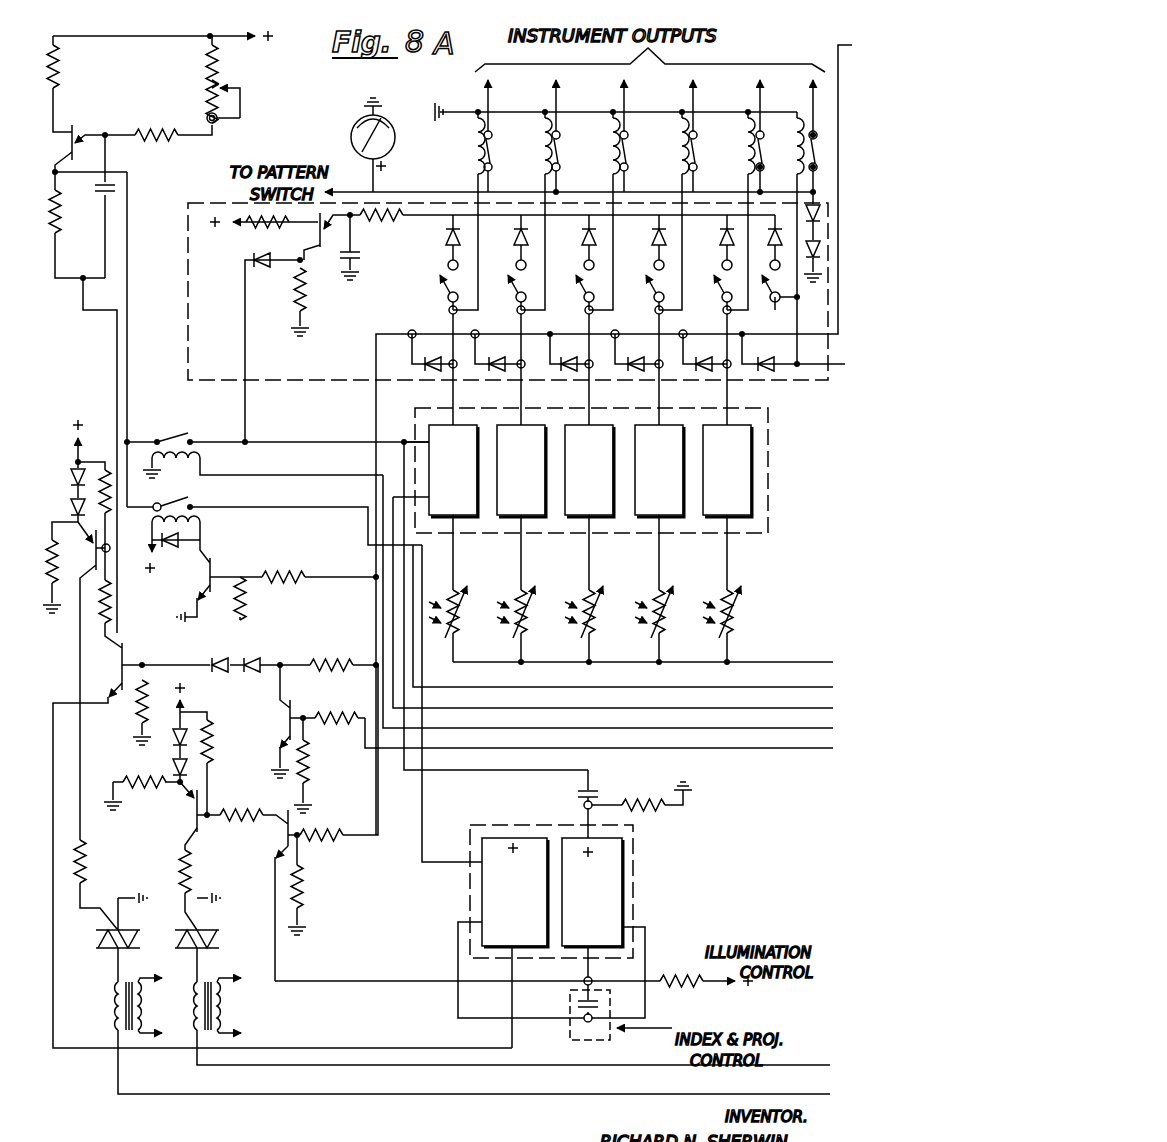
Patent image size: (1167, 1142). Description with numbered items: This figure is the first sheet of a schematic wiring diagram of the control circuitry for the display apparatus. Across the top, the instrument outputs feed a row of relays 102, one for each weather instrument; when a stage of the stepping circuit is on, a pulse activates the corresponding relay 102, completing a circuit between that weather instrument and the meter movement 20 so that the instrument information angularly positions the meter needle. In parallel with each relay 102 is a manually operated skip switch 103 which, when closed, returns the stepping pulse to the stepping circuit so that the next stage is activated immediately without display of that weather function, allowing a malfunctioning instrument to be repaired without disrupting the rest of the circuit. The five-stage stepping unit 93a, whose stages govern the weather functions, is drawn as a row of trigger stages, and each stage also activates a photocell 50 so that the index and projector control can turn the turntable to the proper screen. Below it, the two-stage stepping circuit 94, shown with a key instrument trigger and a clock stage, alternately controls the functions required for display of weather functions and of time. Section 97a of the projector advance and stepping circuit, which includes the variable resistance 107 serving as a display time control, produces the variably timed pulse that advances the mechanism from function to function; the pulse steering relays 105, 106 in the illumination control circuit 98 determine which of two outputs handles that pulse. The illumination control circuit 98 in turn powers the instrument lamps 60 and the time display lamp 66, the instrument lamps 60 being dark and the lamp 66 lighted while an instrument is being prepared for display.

The meter movement 20 is at (351, 136).
The photocell 50 is at (462, 634).
The lamps 60 is at (183, 982).
The light 66 is at (286, 1012).
The five-stage stepping unit 93a is at (818, 431).
The two-stage stepping circuit 94 is at (637, 853).
The section of the projector advance and stepping circuit 97a is at (195, 191).
The illumination control circuit 98 is at (72, 463).
The relay 102 is at (794, 156).
The skip switch 103 is at (442, 266).
The relay 105 is at (205, 428).
The relay 106 is at (165, 504).
The variable resistance 107 is at (208, 88).